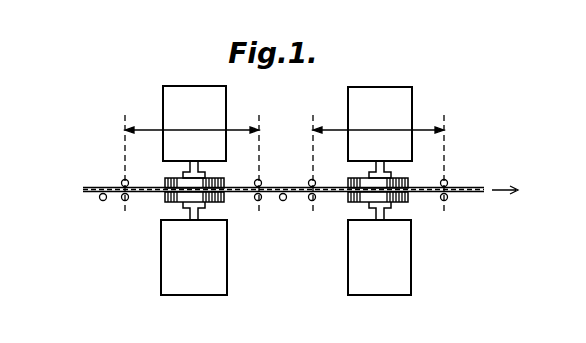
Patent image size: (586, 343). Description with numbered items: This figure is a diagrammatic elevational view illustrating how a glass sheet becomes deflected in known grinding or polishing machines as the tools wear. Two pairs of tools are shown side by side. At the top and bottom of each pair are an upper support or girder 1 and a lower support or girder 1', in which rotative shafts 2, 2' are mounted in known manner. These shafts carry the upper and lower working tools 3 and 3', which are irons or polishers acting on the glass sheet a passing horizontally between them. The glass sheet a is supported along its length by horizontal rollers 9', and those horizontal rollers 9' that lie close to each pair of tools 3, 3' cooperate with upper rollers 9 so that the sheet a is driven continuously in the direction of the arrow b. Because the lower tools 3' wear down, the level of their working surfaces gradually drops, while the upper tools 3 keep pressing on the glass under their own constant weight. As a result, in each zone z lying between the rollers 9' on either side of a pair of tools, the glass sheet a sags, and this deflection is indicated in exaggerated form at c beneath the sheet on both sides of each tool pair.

The upper support or girder 1 is at (290, 123).
The lower support or girder 1' is at (289, 257).
The rotative shaft 2 is at (263, 162).
The rotative shaft 2' is at (256, 223).
The upper working tool 3 is at (281, 160).
The lower working tool 3' is at (268, 218).
The upper rollers 9 is at (307, 166).
The horizontal rollers 9' is at (279, 219).
The glass sheet a is at (92, 186).
The arrow b is at (514, 190).
The deflection of the glass sheet c is at (239, 200).
The zone z is at (284, 122).